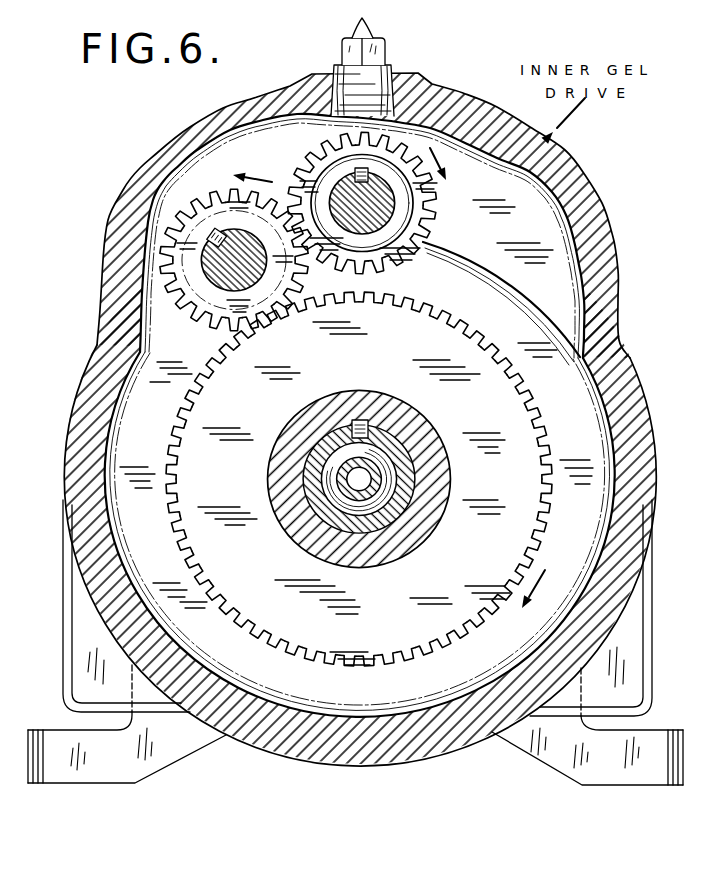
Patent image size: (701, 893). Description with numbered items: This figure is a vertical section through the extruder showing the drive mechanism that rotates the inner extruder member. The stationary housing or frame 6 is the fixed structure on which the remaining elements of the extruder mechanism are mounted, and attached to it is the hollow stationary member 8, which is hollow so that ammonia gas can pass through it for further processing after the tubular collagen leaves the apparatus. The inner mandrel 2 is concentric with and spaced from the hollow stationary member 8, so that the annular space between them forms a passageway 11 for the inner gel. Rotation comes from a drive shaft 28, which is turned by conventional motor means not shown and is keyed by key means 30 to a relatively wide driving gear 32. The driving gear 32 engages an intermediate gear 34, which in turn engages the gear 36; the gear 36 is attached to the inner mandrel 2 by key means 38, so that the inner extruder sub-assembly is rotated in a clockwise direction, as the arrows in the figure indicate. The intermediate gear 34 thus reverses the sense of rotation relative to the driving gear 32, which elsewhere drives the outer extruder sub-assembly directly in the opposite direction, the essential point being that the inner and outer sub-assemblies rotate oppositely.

The stationary housing or frame 6 is at (122, 170).
The key means 30 is at (368, 170).
The drive shaft 28 is at (385, 206).
The driving gear 32 is at (406, 256).
The intermediate gear 34 is at (266, 303).
The gear 36 is at (492, 418).
The key means 38 is at (358, 420).
The inner mandrel 2 is at (403, 477).
The hollow stationary member 8 is at (347, 494).
The passageway 11 is at (373, 504).